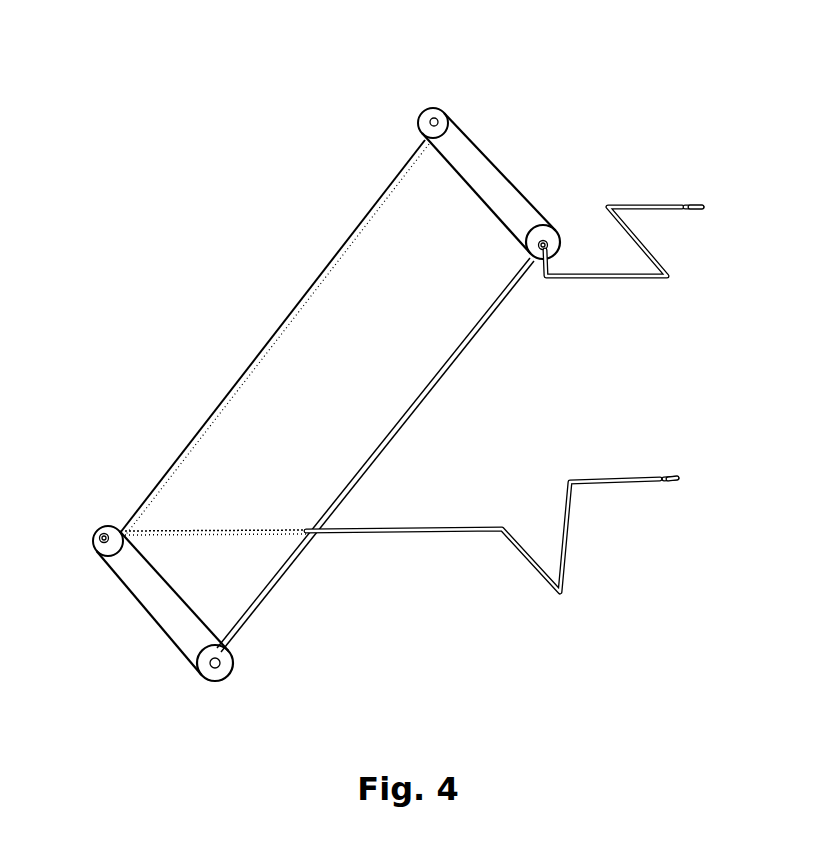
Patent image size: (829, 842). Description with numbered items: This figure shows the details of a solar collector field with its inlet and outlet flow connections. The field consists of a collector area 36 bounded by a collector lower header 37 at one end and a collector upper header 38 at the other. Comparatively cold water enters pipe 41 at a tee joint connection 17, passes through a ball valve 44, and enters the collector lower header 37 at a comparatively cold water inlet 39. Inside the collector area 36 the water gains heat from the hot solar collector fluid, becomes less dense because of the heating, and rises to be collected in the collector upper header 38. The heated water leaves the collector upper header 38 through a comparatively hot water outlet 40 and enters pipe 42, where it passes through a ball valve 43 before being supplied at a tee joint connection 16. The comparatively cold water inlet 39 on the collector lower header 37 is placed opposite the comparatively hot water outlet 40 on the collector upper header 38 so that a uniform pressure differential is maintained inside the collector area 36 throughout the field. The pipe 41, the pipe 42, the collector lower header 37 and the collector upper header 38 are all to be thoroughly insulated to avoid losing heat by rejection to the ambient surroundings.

The tee joint connection 16 is at (702, 211).
The tee joint connection 17 is at (680, 481).
The collector area 36 is at (317, 357).
The collector lower header 37 is at (222, 662).
The collector upper header 38 is at (482, 172).
The comparatively cold water inlet 39 is at (104, 534).
The comparatively hot water outlet 40 is at (543, 258).
The pipe 41 is at (400, 532).
The pipe 42 is at (596, 276).
The ball valve 43 is at (683, 204).
The ball valve 44 is at (661, 482).